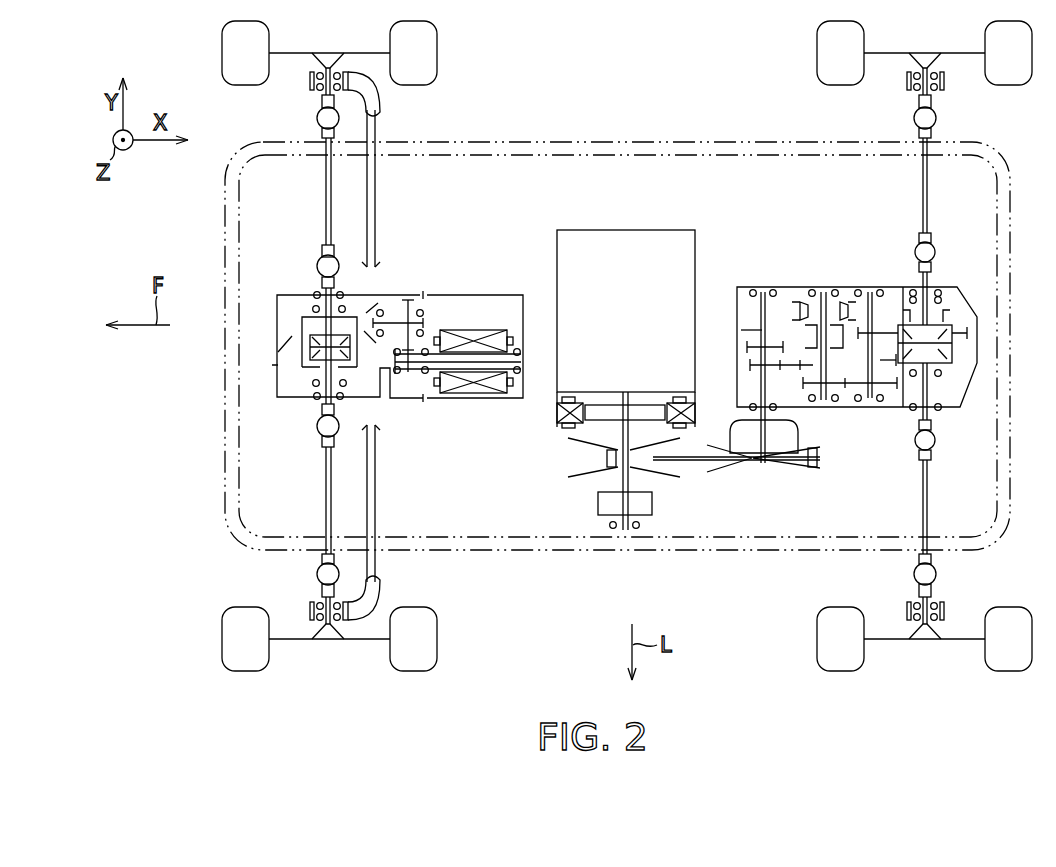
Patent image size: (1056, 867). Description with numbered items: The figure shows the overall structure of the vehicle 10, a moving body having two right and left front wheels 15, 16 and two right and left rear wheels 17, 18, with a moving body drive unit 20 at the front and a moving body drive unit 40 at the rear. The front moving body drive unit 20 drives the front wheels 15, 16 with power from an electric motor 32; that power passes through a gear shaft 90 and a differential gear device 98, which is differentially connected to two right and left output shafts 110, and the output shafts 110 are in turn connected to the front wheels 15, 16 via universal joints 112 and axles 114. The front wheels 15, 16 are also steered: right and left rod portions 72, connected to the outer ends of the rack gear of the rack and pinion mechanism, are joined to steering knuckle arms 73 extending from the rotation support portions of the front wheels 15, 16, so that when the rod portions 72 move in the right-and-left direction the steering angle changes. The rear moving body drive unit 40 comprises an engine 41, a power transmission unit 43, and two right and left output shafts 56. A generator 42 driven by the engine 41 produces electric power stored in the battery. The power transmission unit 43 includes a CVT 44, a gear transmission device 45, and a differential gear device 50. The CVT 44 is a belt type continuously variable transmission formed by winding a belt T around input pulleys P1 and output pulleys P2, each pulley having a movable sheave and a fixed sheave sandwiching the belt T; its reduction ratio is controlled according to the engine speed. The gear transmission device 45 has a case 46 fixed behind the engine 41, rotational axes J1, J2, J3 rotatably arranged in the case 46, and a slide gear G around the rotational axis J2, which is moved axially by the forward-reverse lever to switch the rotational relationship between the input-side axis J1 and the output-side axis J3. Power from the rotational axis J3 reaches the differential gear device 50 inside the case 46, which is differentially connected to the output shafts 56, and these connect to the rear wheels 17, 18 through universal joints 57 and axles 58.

The vehicle 10 is at (637, 103).
The front wheel 15 is at (415, 610).
The front wheel 16 is at (437, 60).
The rear wheel 17 is at (1010, 607).
The rear wheel 18 is at (1018, 86).
The moving body drive unit 20 is at (445, 402).
The electric motor 32 is at (495, 385).
The moving body drive unit 40 is at (856, 410).
The engine 41 is at (663, 230).
The generator 42 is at (555, 412).
The power transmission unit 43 is at (733, 463).
The CVT 44 is at (658, 465).
The gear transmission device 45 is at (760, 318).
The case 46 is at (860, 290).
The differential gear device 50 is at (952, 355).
The output shaft 56 is at (928, 290).
The universal joint 57 is at (935, 250).
The axle 58 is at (928, 183).
The rod portion 72 is at (376, 197).
The steering knuckle arm 73 is at (380, 98).
The gear shaft 90 is at (395, 323).
The differential gear device 98 is at (300, 357).
The output shaft 110 is at (340, 290).
The universal joint 112 is at (320, 264).
The axle 114 is at (326, 184).
The slide gear G is at (805, 305).
The rotational axis J1 is at (741, 330).
The rotational axis J2 is at (830, 300).
The rotational axis J3 is at (872, 362).
The input pulley P1 is at (592, 465).
The output pulley P2 is at (800, 468).
The belt T is at (692, 461).